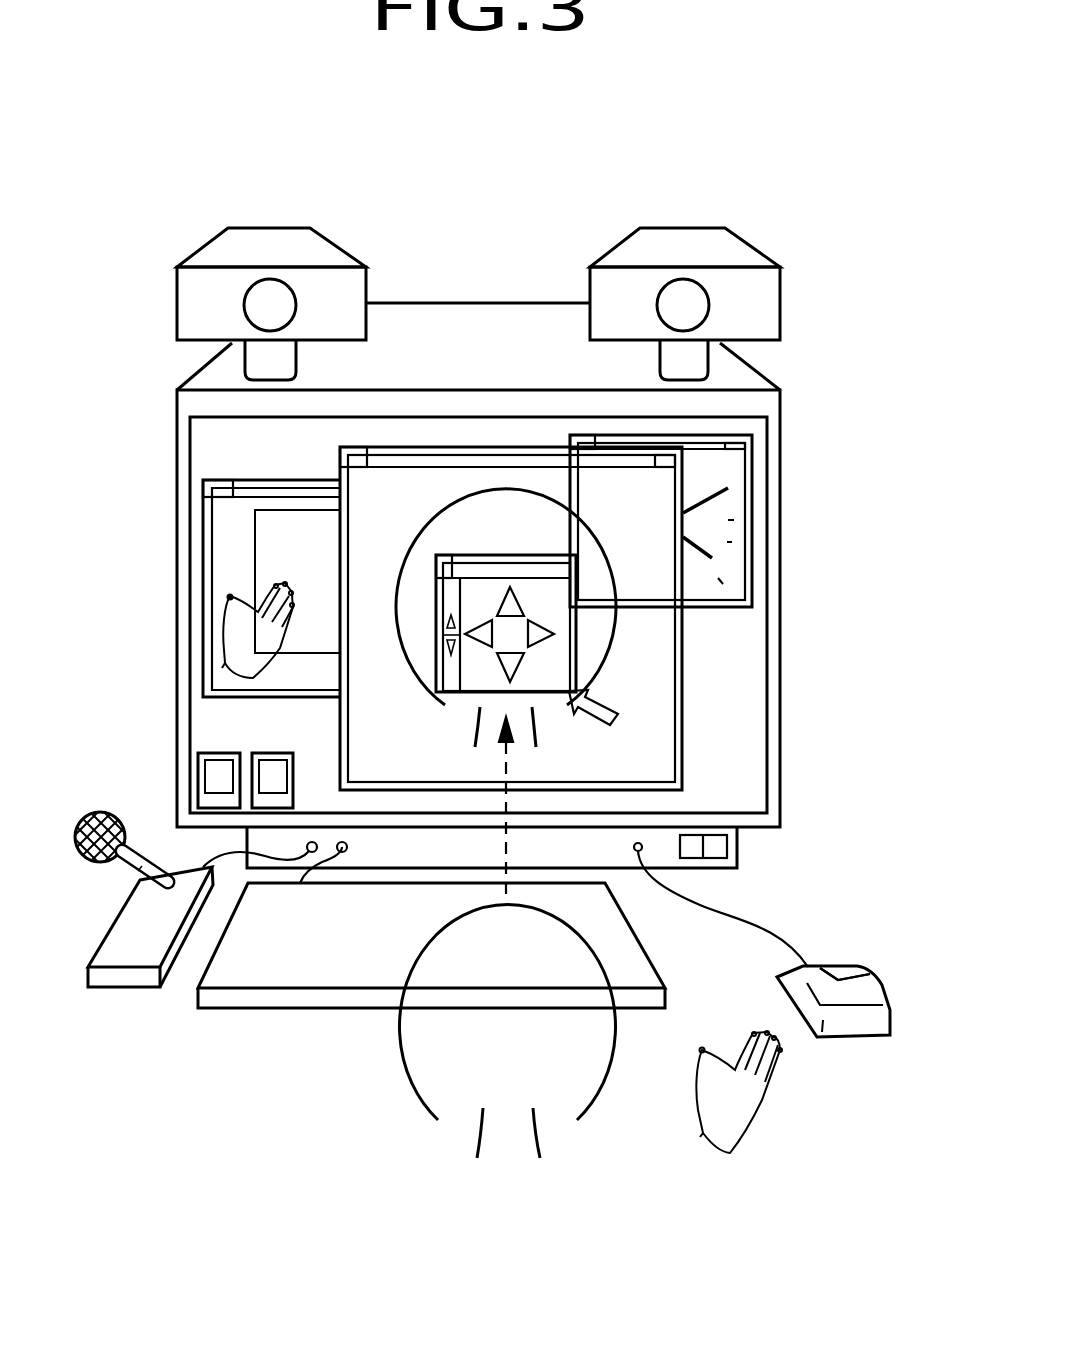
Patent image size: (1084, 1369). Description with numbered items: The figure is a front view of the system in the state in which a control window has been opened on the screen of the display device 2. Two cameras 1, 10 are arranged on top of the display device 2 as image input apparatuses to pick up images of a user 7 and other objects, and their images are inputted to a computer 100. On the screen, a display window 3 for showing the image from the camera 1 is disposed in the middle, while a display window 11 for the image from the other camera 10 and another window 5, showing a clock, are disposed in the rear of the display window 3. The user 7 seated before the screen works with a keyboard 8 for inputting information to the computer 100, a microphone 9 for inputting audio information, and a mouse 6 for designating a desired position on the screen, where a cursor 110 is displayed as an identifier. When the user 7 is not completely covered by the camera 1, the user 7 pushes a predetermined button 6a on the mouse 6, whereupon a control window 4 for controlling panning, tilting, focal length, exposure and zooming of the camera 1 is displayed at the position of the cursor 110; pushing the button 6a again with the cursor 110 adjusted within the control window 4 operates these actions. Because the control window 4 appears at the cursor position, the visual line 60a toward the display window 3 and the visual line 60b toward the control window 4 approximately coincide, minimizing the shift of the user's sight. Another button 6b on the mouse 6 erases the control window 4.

The camera 1 is at (690, 242).
The camera 10 is at (270, 240).
The display device 2 is at (773, 453).
The display window 3 is at (657, 610).
The control window 4 is at (577, 647).
The window 5 is at (727, 543).
The display window 11 is at (228, 535).
The cursor 110 is at (613, 702).
The visual line 60a is at (703, 748).
The visual line 60b is at (823, 768).
The computer 100 is at (370, 848).
The keyboard 8 is at (287, 953).
The microphone 9 is at (105, 810).
The mouse 6 is at (829, 957).
The button 6a is at (793, 967).
The button 6b is at (847, 977).
The user 7 is at (450, 1143).